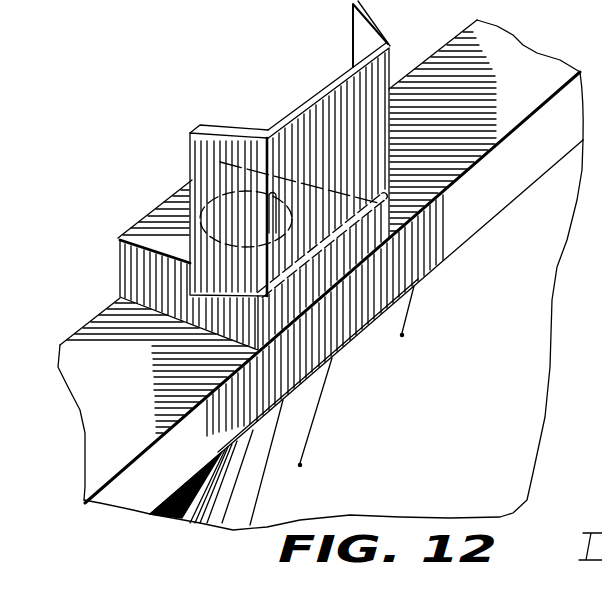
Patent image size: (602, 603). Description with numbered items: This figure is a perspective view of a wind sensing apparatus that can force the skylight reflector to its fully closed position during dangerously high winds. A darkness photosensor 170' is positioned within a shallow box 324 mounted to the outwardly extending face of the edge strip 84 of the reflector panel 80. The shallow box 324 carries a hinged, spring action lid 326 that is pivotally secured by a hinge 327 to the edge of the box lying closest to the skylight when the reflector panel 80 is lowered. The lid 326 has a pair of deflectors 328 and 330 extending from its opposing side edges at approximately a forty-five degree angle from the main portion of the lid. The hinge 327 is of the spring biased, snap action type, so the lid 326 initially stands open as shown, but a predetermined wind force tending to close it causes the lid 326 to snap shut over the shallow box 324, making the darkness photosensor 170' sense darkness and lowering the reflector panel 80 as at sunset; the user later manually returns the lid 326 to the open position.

The reflector panel 80 is at (502, 325).
The edge strip 84 is at (540, 62).
The shallow box 324 is at (119, 266).
The hinged, spring action lid 326 is at (313, 148).
The hinge 327 is at (335, 257).
The deflector 328 is at (222, 130).
The deflector 330 is at (378, 36).
The darkness photosensor 170' is at (215, 187).